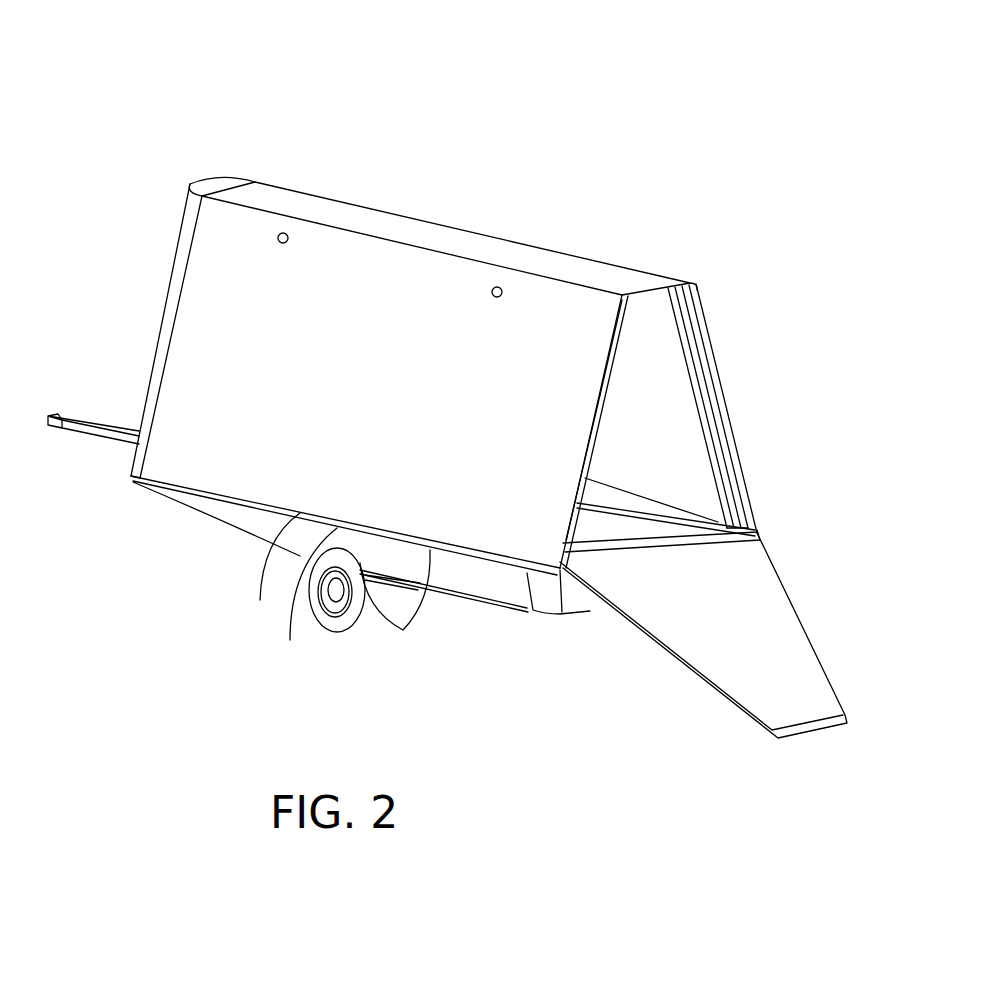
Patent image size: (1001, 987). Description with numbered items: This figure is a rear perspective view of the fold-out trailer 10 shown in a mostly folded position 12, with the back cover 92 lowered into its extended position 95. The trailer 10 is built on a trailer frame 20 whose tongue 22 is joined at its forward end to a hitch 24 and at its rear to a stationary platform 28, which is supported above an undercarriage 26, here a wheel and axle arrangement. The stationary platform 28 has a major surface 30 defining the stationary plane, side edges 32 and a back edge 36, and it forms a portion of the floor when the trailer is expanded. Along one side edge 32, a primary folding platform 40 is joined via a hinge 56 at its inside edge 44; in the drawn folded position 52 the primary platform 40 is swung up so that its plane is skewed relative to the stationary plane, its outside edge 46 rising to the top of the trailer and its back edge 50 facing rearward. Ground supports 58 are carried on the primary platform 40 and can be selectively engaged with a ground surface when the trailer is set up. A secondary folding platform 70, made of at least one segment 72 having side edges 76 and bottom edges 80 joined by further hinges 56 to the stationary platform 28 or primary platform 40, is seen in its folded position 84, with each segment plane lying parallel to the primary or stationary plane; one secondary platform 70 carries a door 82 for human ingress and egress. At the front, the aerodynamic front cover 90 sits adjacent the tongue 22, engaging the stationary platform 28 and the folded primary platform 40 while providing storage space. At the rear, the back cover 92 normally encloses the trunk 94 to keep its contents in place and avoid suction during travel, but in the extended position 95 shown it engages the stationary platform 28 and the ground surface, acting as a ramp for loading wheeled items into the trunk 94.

The fold-out trailer 10 is at (127, 104).
The folded position 12 is at (350, 85).
The trailer frame 20 is at (242, 553).
The tongue 22 is at (96, 440).
The hitch 24 is at (62, 410).
The undercarriage 26 is at (436, 616).
The stationary platform 28 is at (682, 545).
The major surface 30 is at (627, 523).
The side edges 32 is at (405, 628).
The back edge 36 is at (712, 545).
The primary folding platform 40 is at (203, 453).
The inside edge 44 is at (293, 540).
The outside edge 46 is at (395, 223).
The back edge 50 is at (603, 397).
The folded position 52 is at (162, 552).
The hinge 56 is at (700, 322).
The ground supports 58 is at (282, 233).
The secondary folding platform 70 is at (687, 430).
The segment 72 is at (650, 429).
The side edges 76 is at (686, 284).
The bottom edges 80 is at (703, 370).
The door 82 is at (640, 548).
The folded position 84 is at (667, 300).
The front cover 90 is at (199, 172).
The back cover 92 is at (790, 692).
The trunk 94 is at (633, 323).
The extended position 95 is at (862, 633).